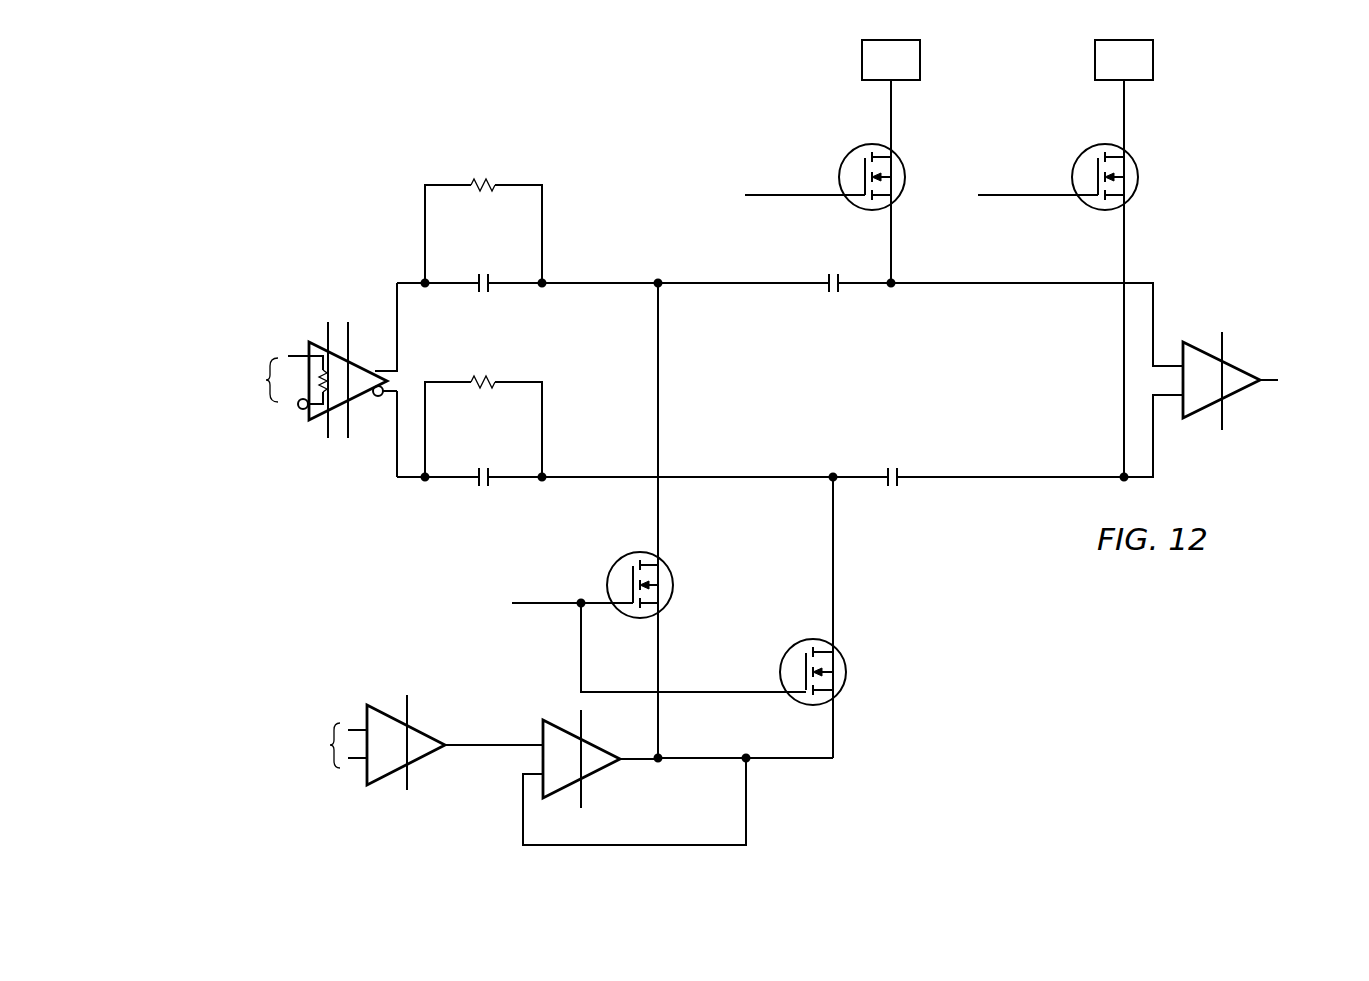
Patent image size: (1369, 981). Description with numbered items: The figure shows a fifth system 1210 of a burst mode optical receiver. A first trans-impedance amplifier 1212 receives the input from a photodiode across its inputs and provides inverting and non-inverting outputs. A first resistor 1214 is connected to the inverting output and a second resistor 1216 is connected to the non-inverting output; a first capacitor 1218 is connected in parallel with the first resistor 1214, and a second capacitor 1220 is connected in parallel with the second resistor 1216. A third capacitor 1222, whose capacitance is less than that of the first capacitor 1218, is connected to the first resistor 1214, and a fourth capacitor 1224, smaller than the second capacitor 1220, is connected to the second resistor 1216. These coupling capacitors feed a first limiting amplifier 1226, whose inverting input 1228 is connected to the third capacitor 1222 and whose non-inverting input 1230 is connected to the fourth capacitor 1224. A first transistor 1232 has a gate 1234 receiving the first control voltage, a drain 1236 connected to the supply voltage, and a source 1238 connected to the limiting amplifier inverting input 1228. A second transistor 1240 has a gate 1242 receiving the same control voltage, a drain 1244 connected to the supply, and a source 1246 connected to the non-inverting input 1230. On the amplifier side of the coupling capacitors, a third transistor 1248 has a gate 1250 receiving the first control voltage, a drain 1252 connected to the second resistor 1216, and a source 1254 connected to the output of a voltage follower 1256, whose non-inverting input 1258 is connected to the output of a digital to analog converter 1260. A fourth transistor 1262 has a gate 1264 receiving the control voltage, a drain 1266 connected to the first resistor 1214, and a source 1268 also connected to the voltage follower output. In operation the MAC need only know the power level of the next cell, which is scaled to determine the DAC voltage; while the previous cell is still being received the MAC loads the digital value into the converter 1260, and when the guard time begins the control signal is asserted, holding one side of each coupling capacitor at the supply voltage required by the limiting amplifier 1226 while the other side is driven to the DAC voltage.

The fifth system 1210 is at (505, 112).
The first trans-impedance amplifier 1212 is at (320, 343).
The first resistor 1214 is at (483, 390).
The second resistor 1216 is at (482, 192).
The first capacitor 1218 is at (483, 492).
The second capacitor 1220 is at (483, 298).
The third capacitor 1222 is at (892, 492).
The fourth capacitor 1224 is at (833, 298).
The first limiting amplifier 1226 is at (1232, 362).
The inverting input 1228 is at (1155, 450).
The non-inverting input 1230 is at (1155, 312).
The first transistor 1232 is at (1083, 150).
The gate 1234 is at (1017, 200).
The drain 1236 is at (1126, 118).
The source 1238 is at (1126, 235).
The second transistor 1240 is at (851, 150).
The gate 1242 is at (785, 200).
The drain 1244 is at (893, 118).
The source 1246 is at (893, 235).
The third transistor 1248 is at (672, 565).
The gate 1250 is at (552, 607).
The drain 1252 is at (658, 502).
The source 1254 is at (660, 645).
The voltage follower 1256 is at (590, 778).
The non-inverting input 1258 is at (478, 740).
The digital to analog converter 1260 is at (418, 762).
The fourth transistor 1262 is at (795, 645).
The gate 1264 is at (727, 697).
The drain 1266 is at (835, 565).
The source 1268 is at (835, 735).